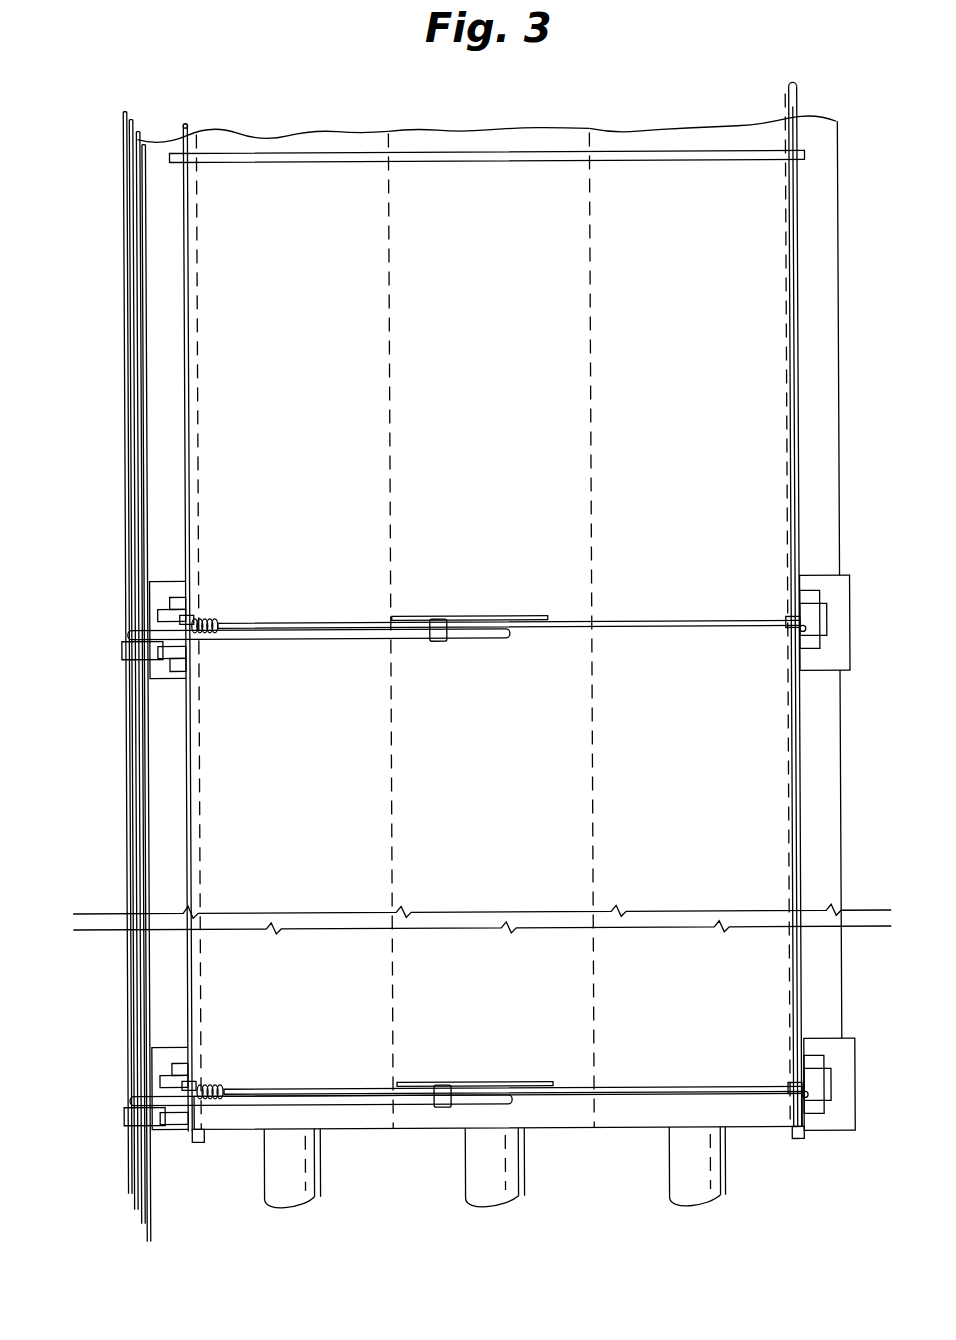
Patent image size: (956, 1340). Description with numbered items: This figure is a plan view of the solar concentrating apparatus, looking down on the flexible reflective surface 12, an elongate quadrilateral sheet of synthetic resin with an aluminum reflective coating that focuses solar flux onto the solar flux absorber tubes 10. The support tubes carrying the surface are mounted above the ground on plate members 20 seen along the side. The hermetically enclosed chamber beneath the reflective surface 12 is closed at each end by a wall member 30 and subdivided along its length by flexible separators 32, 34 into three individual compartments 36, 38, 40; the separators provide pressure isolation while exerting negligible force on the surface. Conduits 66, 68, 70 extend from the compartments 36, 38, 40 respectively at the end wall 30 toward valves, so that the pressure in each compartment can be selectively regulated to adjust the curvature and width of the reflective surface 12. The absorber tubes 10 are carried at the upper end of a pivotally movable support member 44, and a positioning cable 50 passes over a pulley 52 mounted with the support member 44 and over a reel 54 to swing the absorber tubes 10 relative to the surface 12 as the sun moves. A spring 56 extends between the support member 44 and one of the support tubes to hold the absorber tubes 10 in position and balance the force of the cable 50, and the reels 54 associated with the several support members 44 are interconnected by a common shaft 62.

The solar flux absorber tubes 10 is at (142, 176).
The flexible reflective surface 12 is at (490, 423).
The plate members 20 is at (840, 655).
The wall member 30 is at (343, 1130).
The flexible separator 32 is at (388, 290).
The flexible separator 34 is at (590, 283).
The compartment 36 is at (262, 132).
The compartment 38 is at (478, 131).
The compartment 40 is at (690, 128).
The support member 44 is at (306, 640).
The positioning cable 50 is at (652, 629).
The pulley 52 is at (436, 643).
The reel 54 is at (790, 620).
The spring 56 is at (206, 617).
The common shaft 62 is at (793, 822).
The conduit 66 is at (298, 1197).
The conduit 68 is at (505, 1195).
The conduit 70 is at (708, 1190).